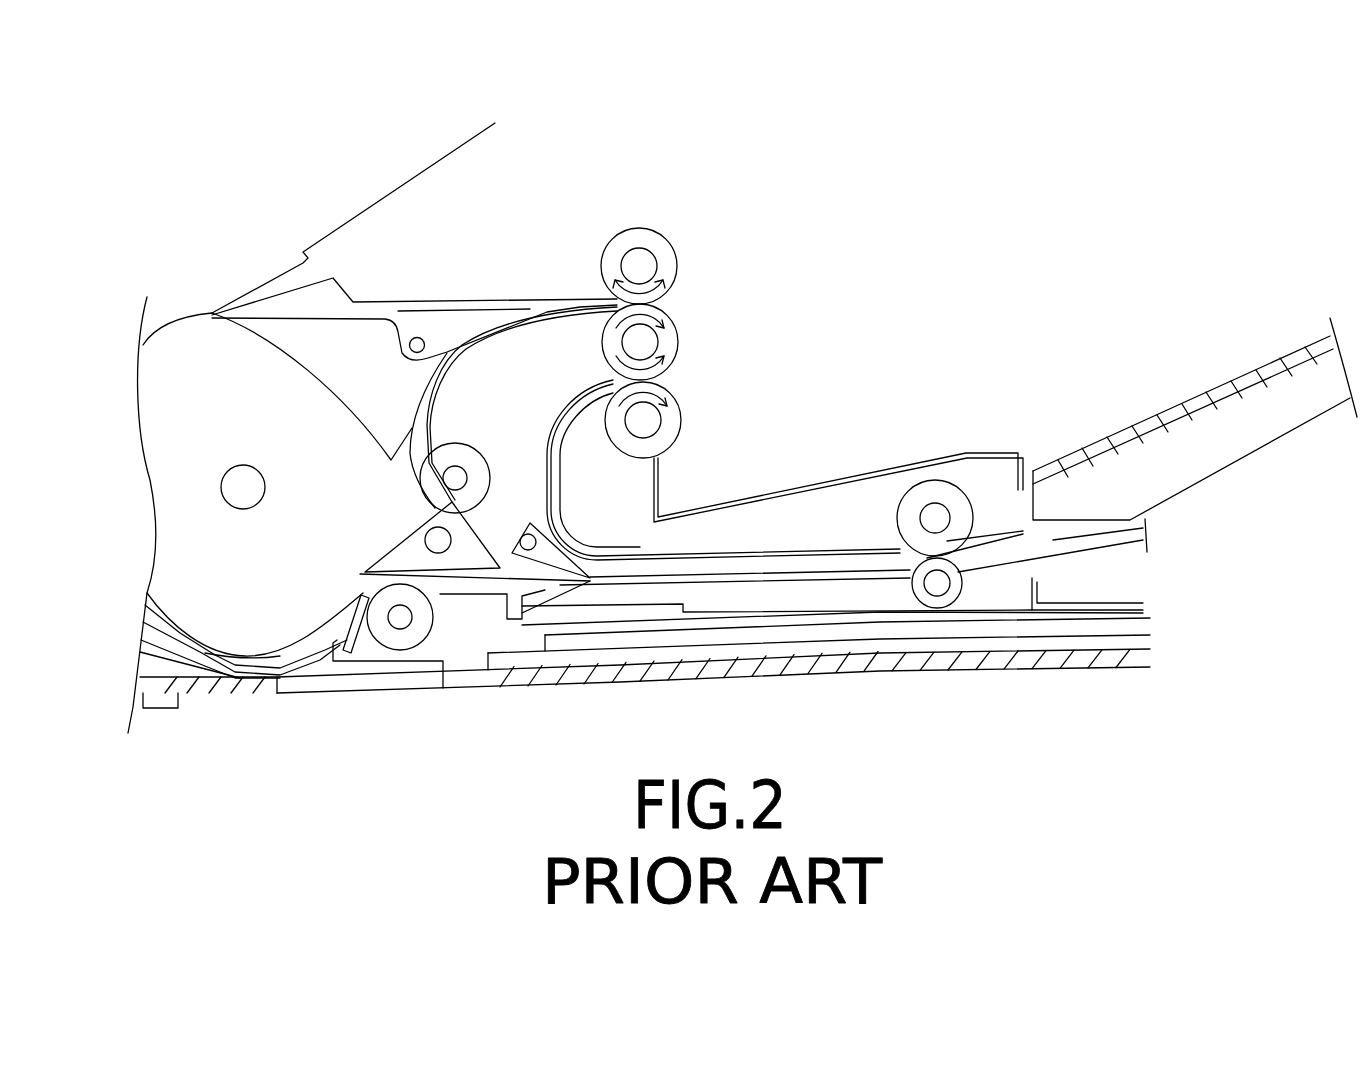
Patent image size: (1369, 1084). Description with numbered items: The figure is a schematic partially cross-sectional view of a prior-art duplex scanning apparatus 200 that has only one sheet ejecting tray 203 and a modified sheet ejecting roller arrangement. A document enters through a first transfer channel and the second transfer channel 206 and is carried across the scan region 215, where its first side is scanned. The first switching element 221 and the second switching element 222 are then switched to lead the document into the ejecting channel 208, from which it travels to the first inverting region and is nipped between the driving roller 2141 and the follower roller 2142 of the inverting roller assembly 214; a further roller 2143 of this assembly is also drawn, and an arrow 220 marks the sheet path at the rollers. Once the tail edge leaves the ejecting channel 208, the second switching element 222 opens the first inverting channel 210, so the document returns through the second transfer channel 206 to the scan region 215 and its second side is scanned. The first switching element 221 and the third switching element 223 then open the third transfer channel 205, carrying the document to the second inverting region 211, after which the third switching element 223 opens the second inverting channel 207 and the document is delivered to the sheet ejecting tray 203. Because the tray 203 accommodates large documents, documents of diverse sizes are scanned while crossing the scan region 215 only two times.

The duplex scanning apparatus 200 is at (1102, 115).
The sheet ejecting tray 203 is at (1173, 418).
The third transfer channel 205 is at (752, 558).
The second transfer channel 206 is at (152, 650).
The second inverting channel 207 is at (555, 450).
The ejecting channel 208 is at (452, 372).
The first inverting channel 210 is at (318, 305).
The second inverting region 211 is at (1033, 537).
The inverting roller assembly 214 is at (672, 225).
The driving roller 2141 is at (672, 340).
The follower roller 2142 is at (618, 236).
The feed roller 2143 is at (668, 423).
The scan region 215 is at (222, 687).
The paper path 220 is at (678, 308).
The first switching element 221 is at (404, 560).
The second switching element 222 is at (442, 323).
The third switching element 223 is at (553, 558).